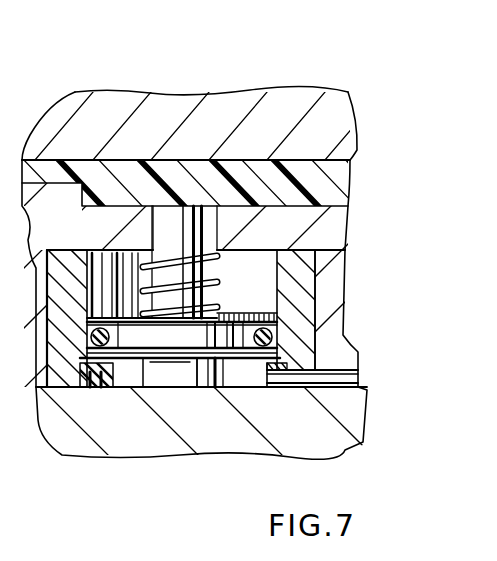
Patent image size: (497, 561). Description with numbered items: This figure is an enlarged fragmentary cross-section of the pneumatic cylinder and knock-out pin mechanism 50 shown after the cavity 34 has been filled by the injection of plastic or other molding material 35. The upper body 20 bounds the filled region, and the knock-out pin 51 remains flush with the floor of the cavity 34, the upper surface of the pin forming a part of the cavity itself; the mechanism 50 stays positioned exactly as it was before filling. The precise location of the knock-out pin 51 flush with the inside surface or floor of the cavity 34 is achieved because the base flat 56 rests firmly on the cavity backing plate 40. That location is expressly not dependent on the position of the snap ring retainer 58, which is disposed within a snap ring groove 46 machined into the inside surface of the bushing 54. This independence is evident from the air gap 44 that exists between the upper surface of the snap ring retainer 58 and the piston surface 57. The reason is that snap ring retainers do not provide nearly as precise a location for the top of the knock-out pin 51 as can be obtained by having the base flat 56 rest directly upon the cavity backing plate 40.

The upper housing body 20 is at (193, 107).
The molding material 35 is at (340, 176).
The cavity 34 is at (322, 212).
The bushing 54 is at (316, 267).
The knock-out pin mechanism 50 is at (241, 307).
The snap ring groove 46 is at (285, 375).
The knock-out pin 51 is at (163, 236).
The air gap 44 is at (122, 372).
The cavity backing plate 40 is at (125, 440).
The base flat 56 is at (188, 373).
The piston surface 57 is at (224, 365).
The snap ring retainer 58 is at (266, 348).